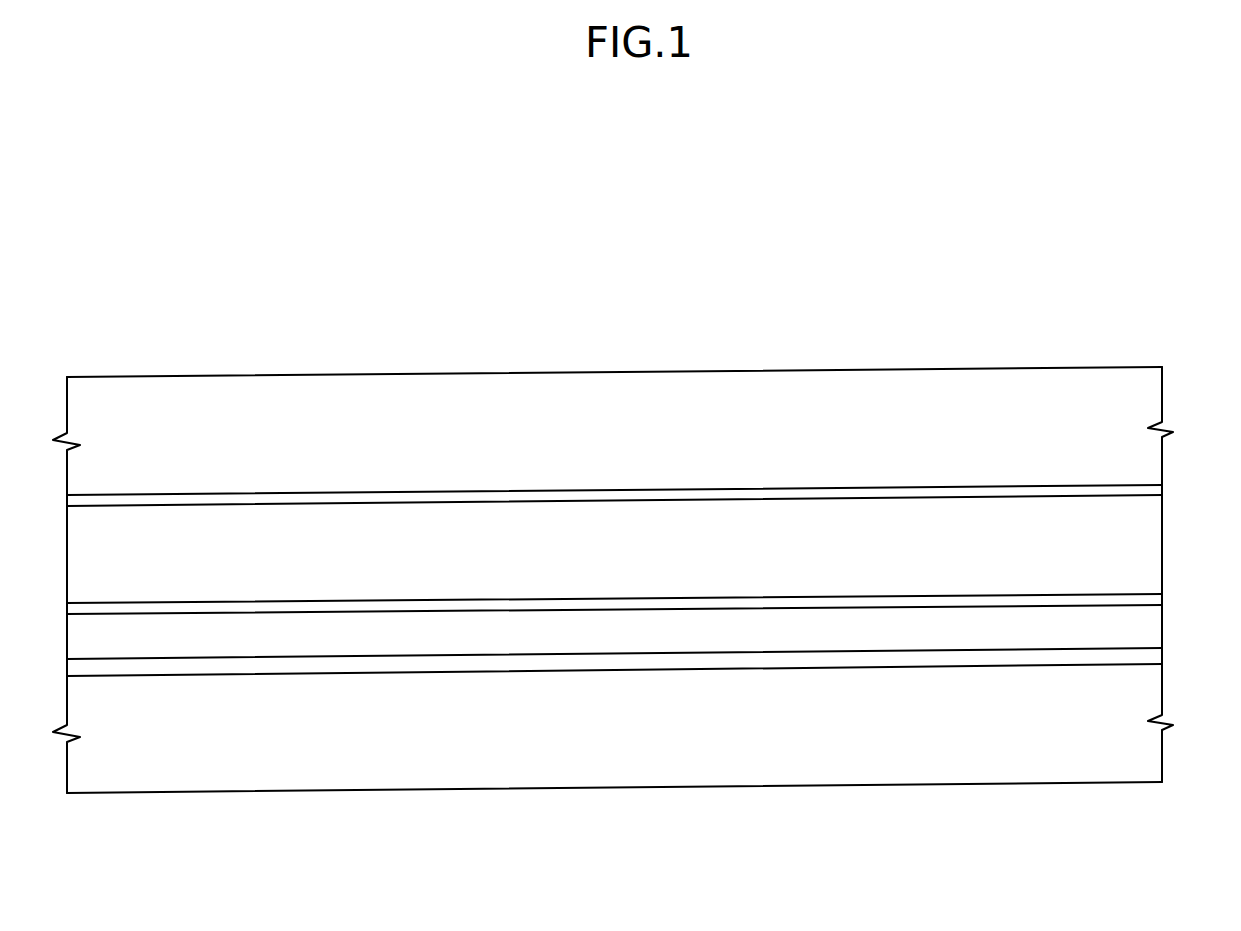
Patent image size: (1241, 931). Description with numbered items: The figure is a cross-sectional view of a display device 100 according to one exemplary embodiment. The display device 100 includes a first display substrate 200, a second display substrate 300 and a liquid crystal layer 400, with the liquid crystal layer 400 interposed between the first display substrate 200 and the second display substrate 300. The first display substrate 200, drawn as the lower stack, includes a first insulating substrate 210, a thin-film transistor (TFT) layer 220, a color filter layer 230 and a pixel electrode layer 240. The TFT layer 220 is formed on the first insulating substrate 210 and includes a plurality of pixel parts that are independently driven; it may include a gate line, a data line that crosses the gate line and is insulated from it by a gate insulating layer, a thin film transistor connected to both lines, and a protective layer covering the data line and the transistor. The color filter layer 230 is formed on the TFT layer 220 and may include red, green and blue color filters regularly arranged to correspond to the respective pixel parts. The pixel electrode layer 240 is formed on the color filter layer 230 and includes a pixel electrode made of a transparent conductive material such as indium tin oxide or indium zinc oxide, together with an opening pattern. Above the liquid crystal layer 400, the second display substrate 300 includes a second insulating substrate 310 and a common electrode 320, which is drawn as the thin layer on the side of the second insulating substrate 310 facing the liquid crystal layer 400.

The display device 100 is at (823, 280).
The first display substrate 200 is at (1178, 592).
The first insulating substrate 210 is at (323, 775).
The thin-film transistor (TFT) layer 220 is at (473, 667).
The color filter layer 230 is at (633, 635).
The pixel electrode layer 240 is at (799, 603).
The second display substrate 300 is at (1178, 367).
The second insulating substrate 310 is at (506, 413).
The common electrode 320 is at (684, 490).
The liquid crystal layer 400 is at (1148, 542).